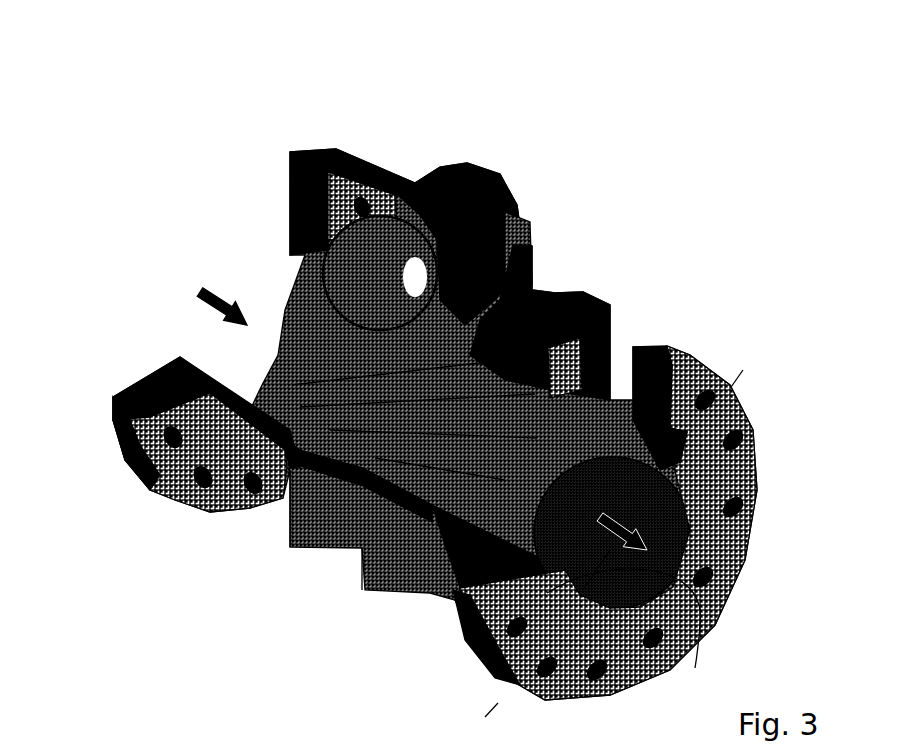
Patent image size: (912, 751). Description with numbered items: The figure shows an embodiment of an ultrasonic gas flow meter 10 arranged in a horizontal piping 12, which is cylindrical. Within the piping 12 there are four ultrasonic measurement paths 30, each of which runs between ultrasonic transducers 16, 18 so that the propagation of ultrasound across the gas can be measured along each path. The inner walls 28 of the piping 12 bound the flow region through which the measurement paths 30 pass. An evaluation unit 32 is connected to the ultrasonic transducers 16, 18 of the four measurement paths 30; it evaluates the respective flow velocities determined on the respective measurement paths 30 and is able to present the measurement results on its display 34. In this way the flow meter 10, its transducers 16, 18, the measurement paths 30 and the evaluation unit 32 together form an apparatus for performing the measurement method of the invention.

The ultrasonic gas flow meter 10 is at (448, 377).
The piping 12 is at (680, 383).
The ultrasonic transducer 16 is at (273, 503).
The ultrasonic transducer 18 is at (530, 345).
The inner walls 28 is at (700, 612).
The measurement path 30 is at (517, 393).
The evaluation unit 32 is at (480, 163).
The display 34 is at (353, 277).